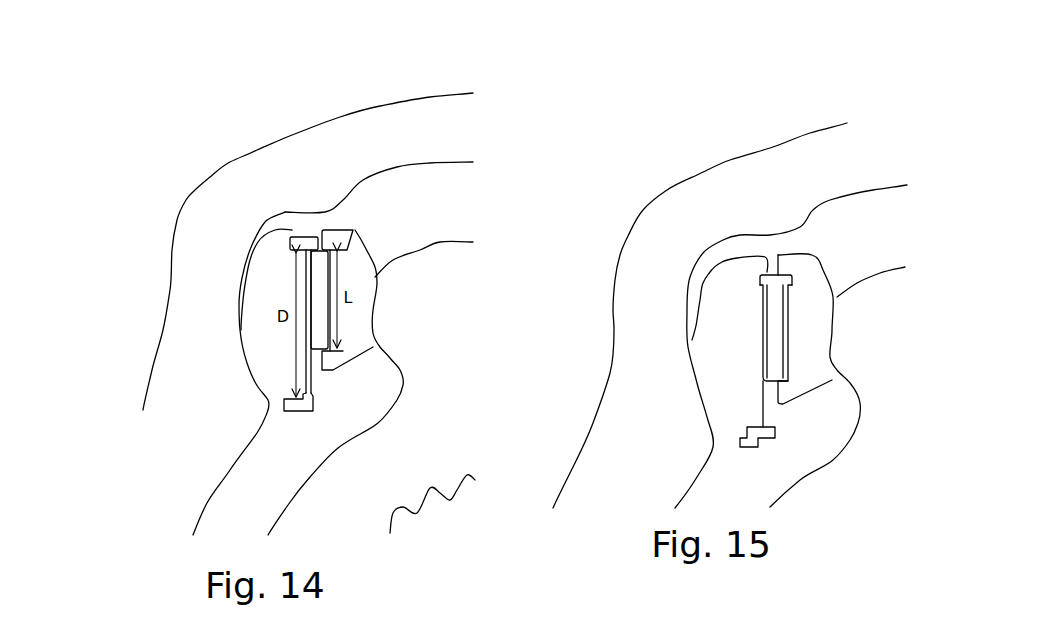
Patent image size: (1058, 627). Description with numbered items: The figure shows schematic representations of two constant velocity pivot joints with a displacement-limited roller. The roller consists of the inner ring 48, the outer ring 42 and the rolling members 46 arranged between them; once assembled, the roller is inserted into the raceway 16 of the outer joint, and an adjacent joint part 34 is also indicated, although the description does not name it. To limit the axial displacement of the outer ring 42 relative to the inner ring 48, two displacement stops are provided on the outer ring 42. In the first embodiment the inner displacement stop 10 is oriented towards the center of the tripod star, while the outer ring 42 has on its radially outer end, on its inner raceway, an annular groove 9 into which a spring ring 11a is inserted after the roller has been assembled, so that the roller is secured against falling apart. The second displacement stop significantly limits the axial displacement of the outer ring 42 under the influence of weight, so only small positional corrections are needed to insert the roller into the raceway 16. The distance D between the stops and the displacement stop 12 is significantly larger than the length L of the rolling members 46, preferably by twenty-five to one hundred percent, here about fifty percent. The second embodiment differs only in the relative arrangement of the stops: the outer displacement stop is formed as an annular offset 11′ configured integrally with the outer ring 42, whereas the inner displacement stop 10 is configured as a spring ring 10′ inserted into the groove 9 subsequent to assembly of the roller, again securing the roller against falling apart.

In FIG. 14, the annular groove 9 is at (284, 241).
In FIG. 15, the annular groove 9 is at (731, 429).
In FIG. 14, the displacement stop 10 is at (282, 402).
In FIG. 15, the spring ring 10′ is at (727, 437).
In FIG. 14, the spring ring 11a is at (301, 237).
In FIG. 15, the annular offset 11′ is at (760, 270).
In FIG. 14, the displacement stop 12 is at (237, 148).
In FIG. 14, the raceway 16 is at (230, 252).
In FIG. 15, the raceway 16 is at (680, 296).
In FIG. 14, the arm 34 is at (460, 258).
In FIG. 15, the arm 34 is at (887, 293).
In FIG. 14, the outer ring 42 is at (267, 352).
In FIG. 14, the rolling members 46 is at (318, 303).
In FIG. 15, the rolling members 46 is at (773, 290).
In FIG. 14, the inner ring 48 is at (344, 240).
In FIG. 15, the inner ring 48 is at (806, 281).